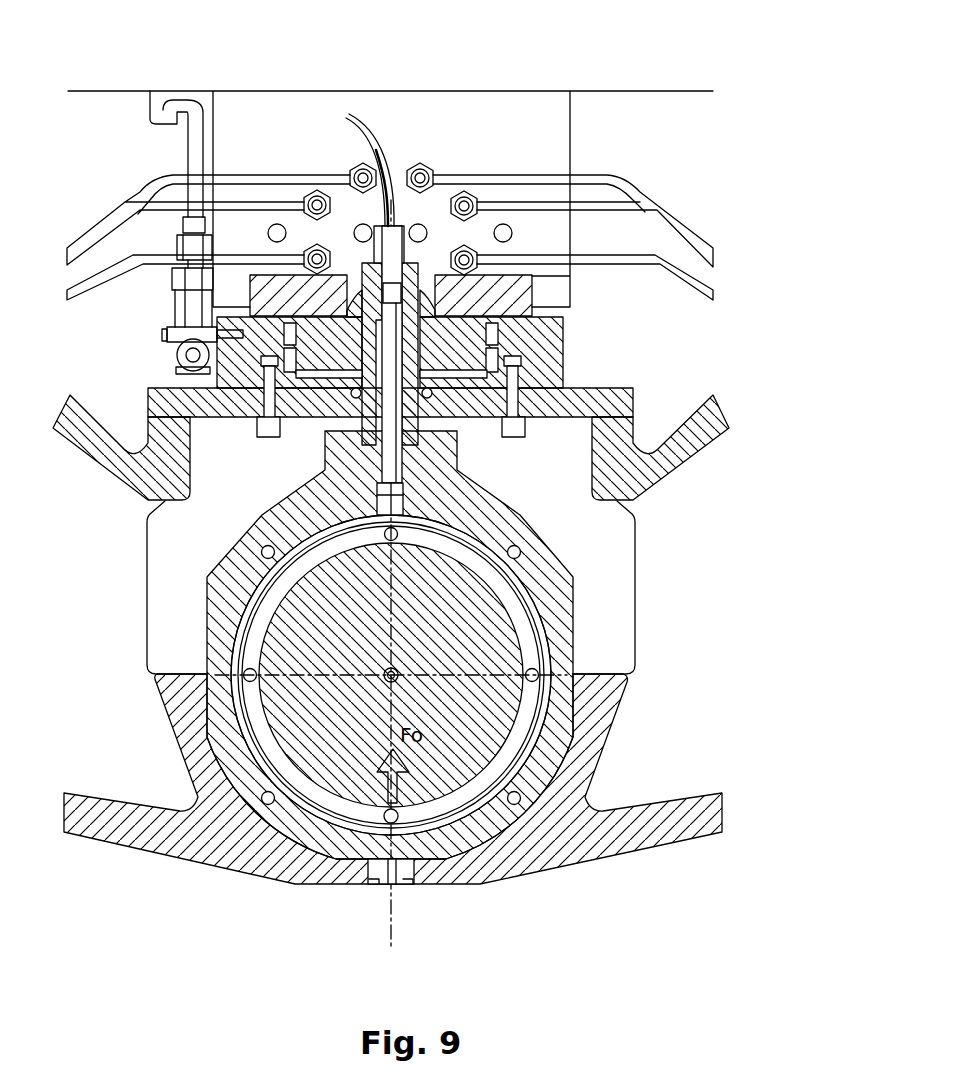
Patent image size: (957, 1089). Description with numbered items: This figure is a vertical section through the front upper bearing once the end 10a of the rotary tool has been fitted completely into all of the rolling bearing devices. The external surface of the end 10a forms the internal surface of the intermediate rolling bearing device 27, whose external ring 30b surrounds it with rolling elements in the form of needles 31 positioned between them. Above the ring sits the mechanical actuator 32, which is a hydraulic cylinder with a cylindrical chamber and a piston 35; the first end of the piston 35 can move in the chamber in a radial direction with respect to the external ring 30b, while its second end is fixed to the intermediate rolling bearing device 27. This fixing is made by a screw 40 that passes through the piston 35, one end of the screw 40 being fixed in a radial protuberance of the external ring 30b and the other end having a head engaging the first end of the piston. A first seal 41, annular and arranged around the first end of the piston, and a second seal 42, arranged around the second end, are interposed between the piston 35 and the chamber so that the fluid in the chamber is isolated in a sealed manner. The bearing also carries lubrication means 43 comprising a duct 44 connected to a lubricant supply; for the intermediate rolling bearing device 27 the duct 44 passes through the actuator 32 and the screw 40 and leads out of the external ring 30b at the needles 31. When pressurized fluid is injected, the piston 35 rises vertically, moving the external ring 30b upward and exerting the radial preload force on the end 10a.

The end of the rotary tool 10a is at (522, 719).
The intermediate rolling bearing device 27 is at (386, 826).
The external ring 30b is at (334, 824).
The needles 31 is at (400, 819).
The mechanical actuator 32 is at (447, 303).
The piston 35 is at (445, 295).
The screw 40 is at (350, 302).
The first seal 41 is at (495, 355).
The second seal 42 is at (357, 393).
The lubrication means 43 is at (402, 206).
The duct 44 is at (392, 455).